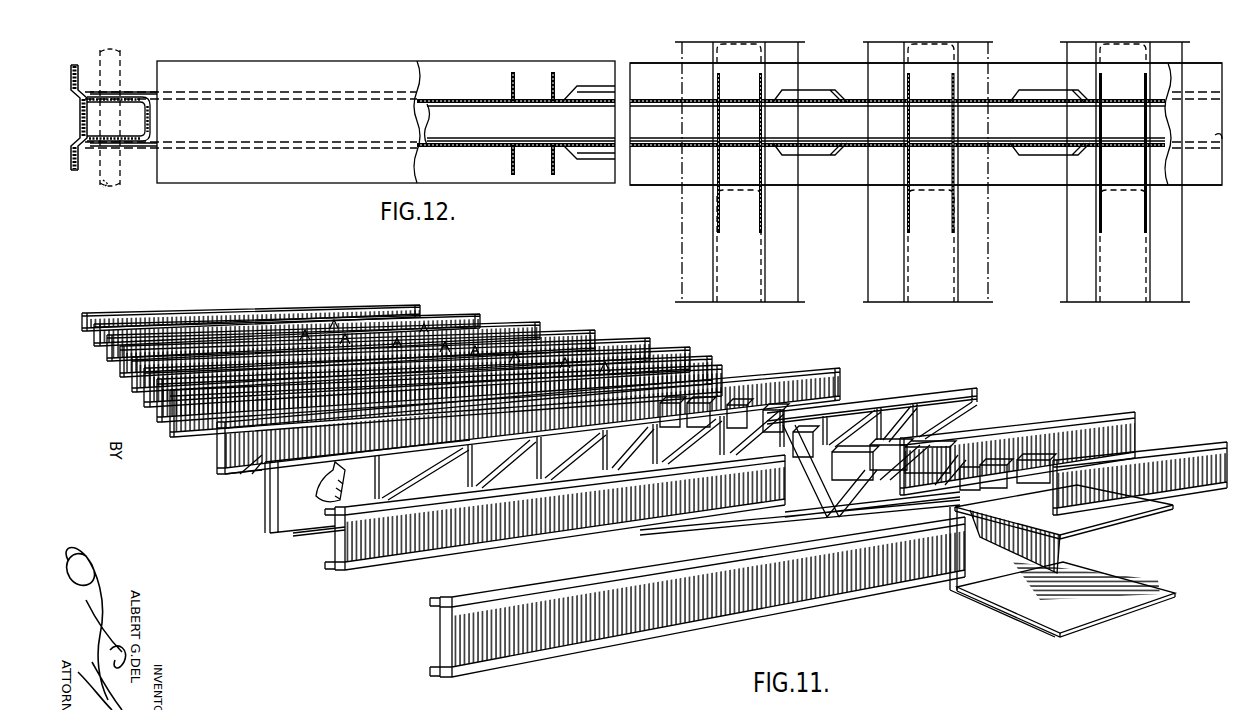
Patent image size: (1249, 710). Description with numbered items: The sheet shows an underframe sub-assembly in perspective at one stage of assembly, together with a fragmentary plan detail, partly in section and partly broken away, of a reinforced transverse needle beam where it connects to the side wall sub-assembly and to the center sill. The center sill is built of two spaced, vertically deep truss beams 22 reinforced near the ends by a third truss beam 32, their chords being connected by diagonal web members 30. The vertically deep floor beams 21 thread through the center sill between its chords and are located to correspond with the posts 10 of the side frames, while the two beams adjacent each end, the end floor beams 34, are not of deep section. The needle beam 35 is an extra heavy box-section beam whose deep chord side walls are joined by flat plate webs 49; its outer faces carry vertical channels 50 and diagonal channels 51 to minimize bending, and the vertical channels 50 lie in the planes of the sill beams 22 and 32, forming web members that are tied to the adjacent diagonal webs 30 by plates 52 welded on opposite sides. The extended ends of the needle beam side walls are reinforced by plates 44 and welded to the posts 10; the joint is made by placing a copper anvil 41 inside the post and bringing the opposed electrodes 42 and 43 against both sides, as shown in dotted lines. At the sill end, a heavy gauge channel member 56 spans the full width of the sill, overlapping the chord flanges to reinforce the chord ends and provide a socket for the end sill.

In FIG. 12, the post 10 is at (134, 135).
In FIG. 11, the floor beam 21 is at (250, 462).
In FIG. 12, the truss beam 22 is at (785, 288).
In FIG. 11, the truss beam 22 is at (857, 455).
In FIG. 12, the diagonal web member 30 is at (728, 256).
In FIG. 11, the diagonal web member 30 is at (745, 523).
In FIG. 12, the third truss beam 32 is at (993, 284).
In FIG. 11, the third truss beam 32 is at (803, 440).
In FIG. 11, the end floor beam 34 is at (379, 562).
In FIG. 12, the needle beam 35 is at (463, 98).
In FIG. 11, the needle beam 35 is at (330, 500).
In FIG. 12, the copper anvil 41 is at (117, 112).
In FIG. 12, the electrode 42 is at (98, 52).
In FIG. 12, the electrode 43 is at (100, 185).
In FIG. 12, the reinforcing plate 44 is at (149, 147).
In FIG. 11, the reinforcing plate 44 is at (283, 522).
In FIG. 12, the flat plate web 49 is at (486, 148).
In FIG. 12, the vertical channel 50 is at (514, 172).
In FIG. 11, the vertical channel 50 is at (471, 484).
In FIG. 12, the diagonal channel 51 is at (834, 158).
In FIG. 11, the diagonal channel 51 is at (438, 490).
In FIG. 12, the connecting plate 52 is at (713, 196).
In FIG. 11, the channel member 56 is at (1010, 603).